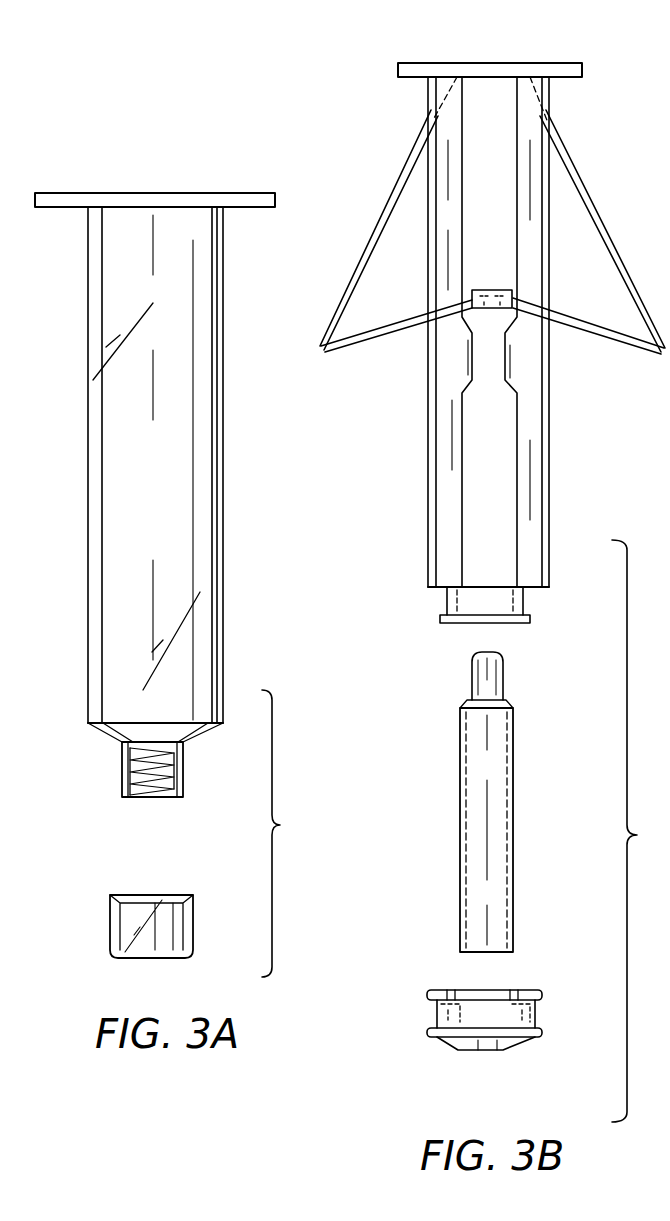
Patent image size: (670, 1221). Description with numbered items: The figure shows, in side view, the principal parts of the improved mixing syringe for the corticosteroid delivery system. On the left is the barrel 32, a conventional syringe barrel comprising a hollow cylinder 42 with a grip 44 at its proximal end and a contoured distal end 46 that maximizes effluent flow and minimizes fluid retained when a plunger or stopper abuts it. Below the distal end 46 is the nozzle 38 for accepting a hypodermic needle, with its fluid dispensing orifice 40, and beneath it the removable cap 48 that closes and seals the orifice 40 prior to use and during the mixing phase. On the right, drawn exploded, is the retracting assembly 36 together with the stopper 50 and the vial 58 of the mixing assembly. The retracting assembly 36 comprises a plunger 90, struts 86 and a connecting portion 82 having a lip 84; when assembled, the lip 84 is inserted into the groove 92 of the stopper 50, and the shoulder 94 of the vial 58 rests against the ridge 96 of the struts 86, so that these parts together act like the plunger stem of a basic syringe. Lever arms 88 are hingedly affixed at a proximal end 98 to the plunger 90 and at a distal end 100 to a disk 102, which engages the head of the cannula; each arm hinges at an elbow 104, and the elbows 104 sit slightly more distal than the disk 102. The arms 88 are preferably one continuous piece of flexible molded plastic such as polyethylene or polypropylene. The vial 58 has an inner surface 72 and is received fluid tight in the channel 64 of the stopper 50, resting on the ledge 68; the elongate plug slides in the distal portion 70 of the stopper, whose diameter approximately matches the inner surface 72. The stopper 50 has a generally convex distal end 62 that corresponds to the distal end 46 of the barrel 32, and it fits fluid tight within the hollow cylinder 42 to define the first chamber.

In FIG. 3A, the barrel 32 is at (153, 557).
In FIG. 3B, the retracting assembly 36 is at (492, 573).
In FIG. 3A, the nozzle 38 is at (121, 762).
In FIG. 3A, the fluid dispensing orifice 40 is at (150, 798).
In FIG. 3A, the hollow cylinder 42 is at (101, 543).
In FIG. 3A, the grip 44 is at (59, 206).
In FIG. 3A, the distal end 46 is at (188, 720).
In FIG. 3A, the removable cap 48 is at (178, 930).
In FIG. 3B, the stopper 50 is at (536, 1014).
In FIG. 3B, the vial 58 is at (515, 835).
In FIG. 3B, the convex distal end 62 is at (525, 1043).
In FIG. 3B, the channel 64 is at (484, 1050).
In FIG. 3B, the ledge 68 is at (466, 990).
In FIG. 3B, the distal portion 70 is at (497, 1050).
In FIG. 3B, the inner surface 72 is at (467, 822).
In FIG. 3B, the connecting portion 82 is at (527, 597).
In FIG. 3B, the lip 84 is at (440, 619).
In FIG. 3B, the struts 86 is at (450, 545).
In FIG. 3B, the lever arms 88 is at (381, 225).
In FIG. 3B, the plunger 90 is at (572, 63).
In FIG. 3B, the groove 92 is at (441, 1015).
In FIG. 3B, the shoulder 94 is at (468, 702).
In FIG. 3B, the ridge 96 is at (463, 390).
In FIG. 3B, the proximal end 98 is at (458, 77).
In FIG. 3B, the distal end 100 is at (472, 298).
In FIG. 3B, the disk 102 is at (492, 293).
In FIG. 3B, the elbow 104 is at (648, 349).